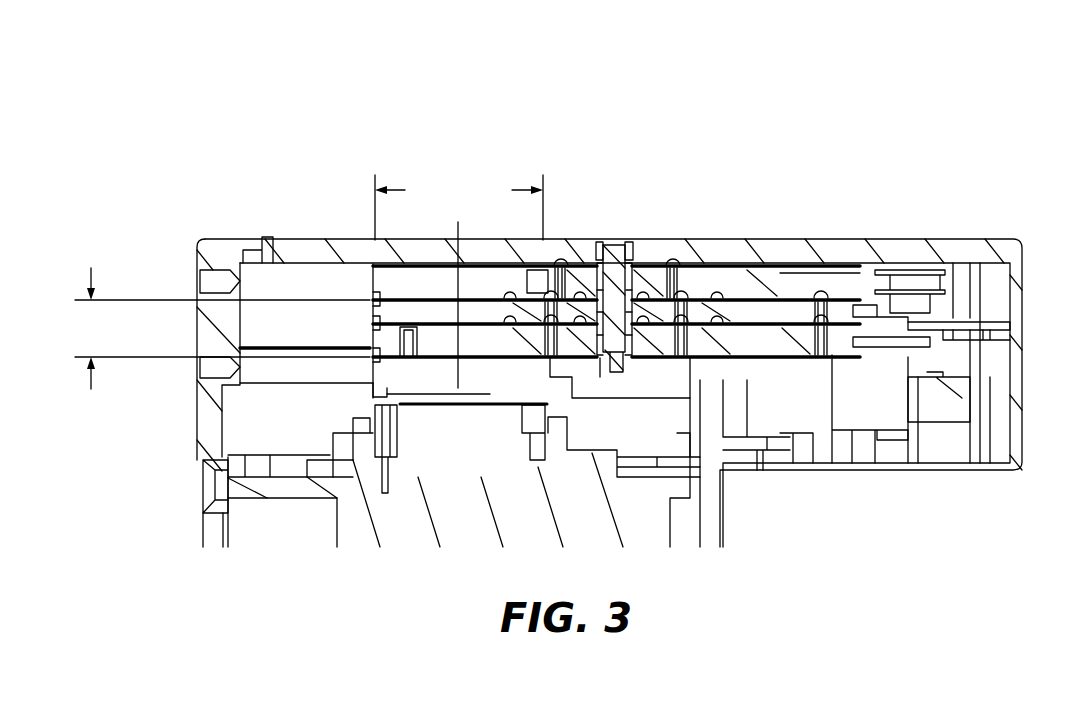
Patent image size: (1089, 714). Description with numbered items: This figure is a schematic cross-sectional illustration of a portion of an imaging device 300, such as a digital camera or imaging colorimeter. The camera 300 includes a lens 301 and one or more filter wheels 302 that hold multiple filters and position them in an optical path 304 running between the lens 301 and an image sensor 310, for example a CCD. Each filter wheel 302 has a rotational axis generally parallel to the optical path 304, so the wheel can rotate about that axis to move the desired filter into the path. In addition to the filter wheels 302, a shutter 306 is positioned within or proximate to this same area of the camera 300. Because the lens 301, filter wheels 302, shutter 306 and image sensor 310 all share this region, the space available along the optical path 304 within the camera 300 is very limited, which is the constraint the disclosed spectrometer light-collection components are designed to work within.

The imaging device 300 is at (952, 137).
The lens 301 is at (425, 240).
The filter wheel 302 is at (358, 320).
The optical path 304 is at (458, 222).
The shutter 306 is at (514, 256).
The image sensor 310 is at (396, 406).